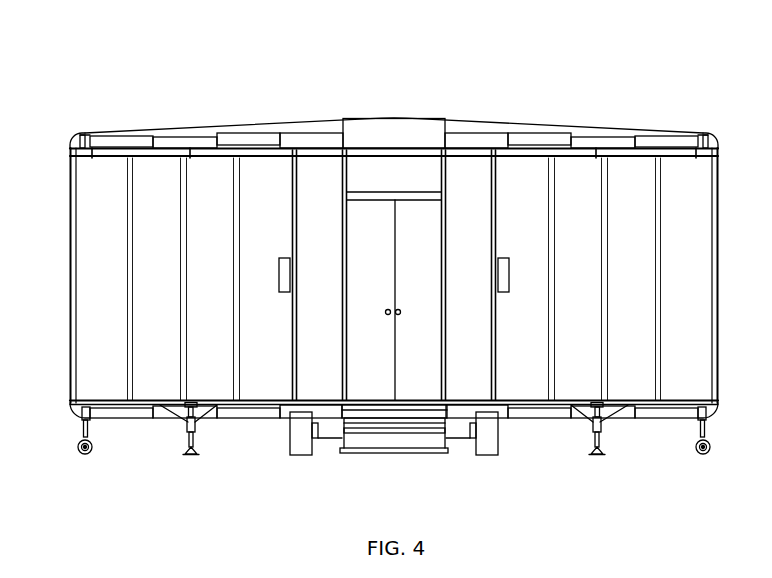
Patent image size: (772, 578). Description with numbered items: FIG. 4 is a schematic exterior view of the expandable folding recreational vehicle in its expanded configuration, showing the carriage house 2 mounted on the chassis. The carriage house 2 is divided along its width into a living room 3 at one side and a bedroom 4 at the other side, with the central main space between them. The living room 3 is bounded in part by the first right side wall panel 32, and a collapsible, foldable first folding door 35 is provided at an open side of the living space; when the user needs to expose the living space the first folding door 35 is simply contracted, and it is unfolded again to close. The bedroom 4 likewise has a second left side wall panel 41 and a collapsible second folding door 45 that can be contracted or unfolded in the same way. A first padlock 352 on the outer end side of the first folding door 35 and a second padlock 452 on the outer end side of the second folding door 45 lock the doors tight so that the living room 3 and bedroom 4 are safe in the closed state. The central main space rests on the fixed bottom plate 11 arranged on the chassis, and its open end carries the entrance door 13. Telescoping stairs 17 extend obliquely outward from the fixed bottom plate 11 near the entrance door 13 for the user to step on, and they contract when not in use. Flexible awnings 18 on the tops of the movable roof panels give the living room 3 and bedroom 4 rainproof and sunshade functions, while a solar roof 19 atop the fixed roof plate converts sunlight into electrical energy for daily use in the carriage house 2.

The carriage house 2 is at (394, 80).
The living room 3 is at (571, 101).
The bedroom 4 is at (216, 102).
The fixed bottom plate 11 is at (394, 455).
The entrance door 13 is at (355, 350).
The telescoping stairs 17 is at (399, 457).
The flexible awnings 18 is at (248, 115).
The solar roof 19 is at (394, 117).
The first right side wall panel 32 is at (739, 275).
The first folding door 35 is at (715, 276).
The second left side wall panel 41 is at (49, 275).
The second folding door 45 is at (73, 276).
The first padlock 352 is at (547, 383).
The second padlock 452 is at (242, 383).